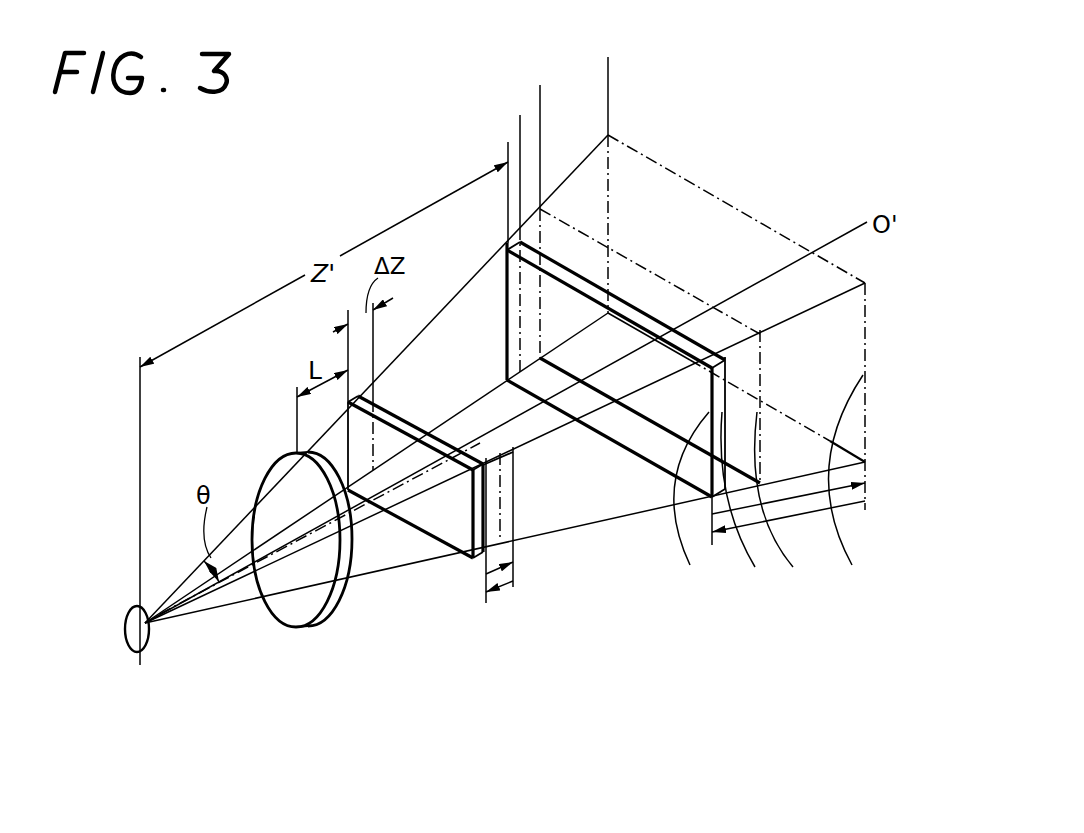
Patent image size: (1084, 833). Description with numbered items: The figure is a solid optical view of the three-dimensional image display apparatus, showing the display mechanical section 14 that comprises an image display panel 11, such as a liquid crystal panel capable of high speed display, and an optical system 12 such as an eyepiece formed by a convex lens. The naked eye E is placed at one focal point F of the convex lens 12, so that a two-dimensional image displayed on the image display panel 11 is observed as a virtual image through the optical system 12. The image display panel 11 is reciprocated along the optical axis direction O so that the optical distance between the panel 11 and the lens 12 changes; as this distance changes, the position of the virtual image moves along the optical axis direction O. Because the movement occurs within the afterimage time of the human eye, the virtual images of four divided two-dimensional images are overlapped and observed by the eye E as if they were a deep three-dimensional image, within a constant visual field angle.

The image display panel 11 is at (470, 548).
The optical system 12 is at (308, 629).
The display mechanical section 14 is at (585, 654).
The naked eye E is at (130, 607).
The focal point F is at (138, 527).
The optical axis O is at (127, 633).